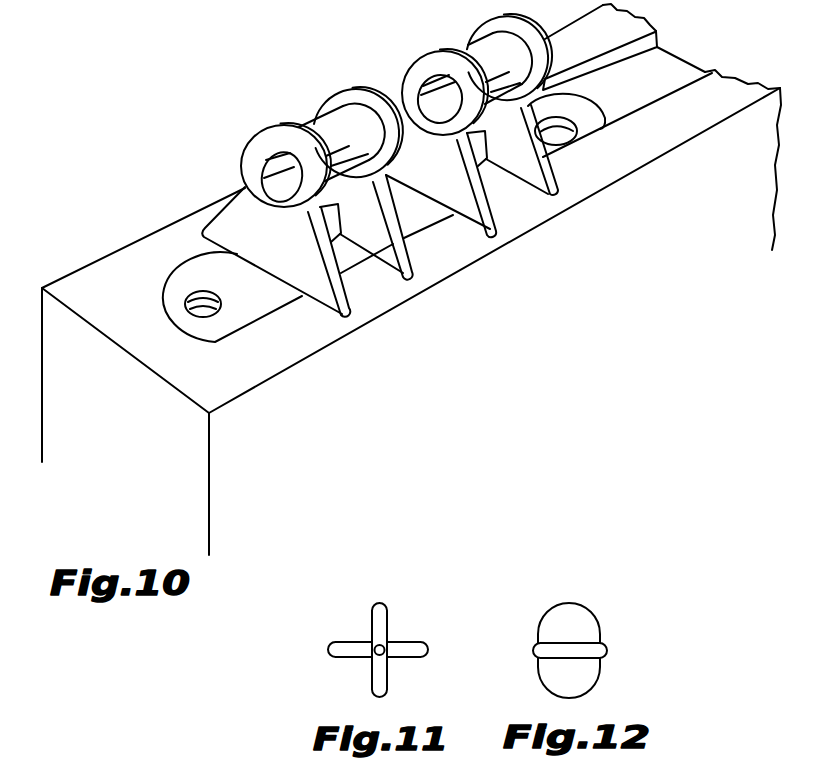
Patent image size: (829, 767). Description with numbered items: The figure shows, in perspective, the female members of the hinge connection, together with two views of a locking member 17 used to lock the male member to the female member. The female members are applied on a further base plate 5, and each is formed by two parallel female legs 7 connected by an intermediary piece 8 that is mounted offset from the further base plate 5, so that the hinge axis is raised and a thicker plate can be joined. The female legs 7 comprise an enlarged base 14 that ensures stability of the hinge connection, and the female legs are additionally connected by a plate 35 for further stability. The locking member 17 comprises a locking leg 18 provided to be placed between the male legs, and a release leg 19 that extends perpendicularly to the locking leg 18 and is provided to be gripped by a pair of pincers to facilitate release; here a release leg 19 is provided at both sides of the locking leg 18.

In FIG. 10, the further base plate 5 is at (220, 268).
In FIG. 10, the female legs 7 is at (258, 147).
In FIG. 10, the intermediary piece 8 is at (325, 133).
In FIG. 10, the enlarged base 14 is at (255, 217).
In FIG. 10, the plate 35 is at (473, 150).
In FIG. 11, the locking member 17 is at (377, 634).
In FIG. 12, the locking member 17 is at (576, 634).
In FIG. 11, the locking leg 18 is at (382, 613).
In FIG. 12, the locking leg 18 is at (562, 677).
In FIG. 11, the release leg 19 is at (345, 648).
In FIG. 12, the release leg 19 is at (578, 651).